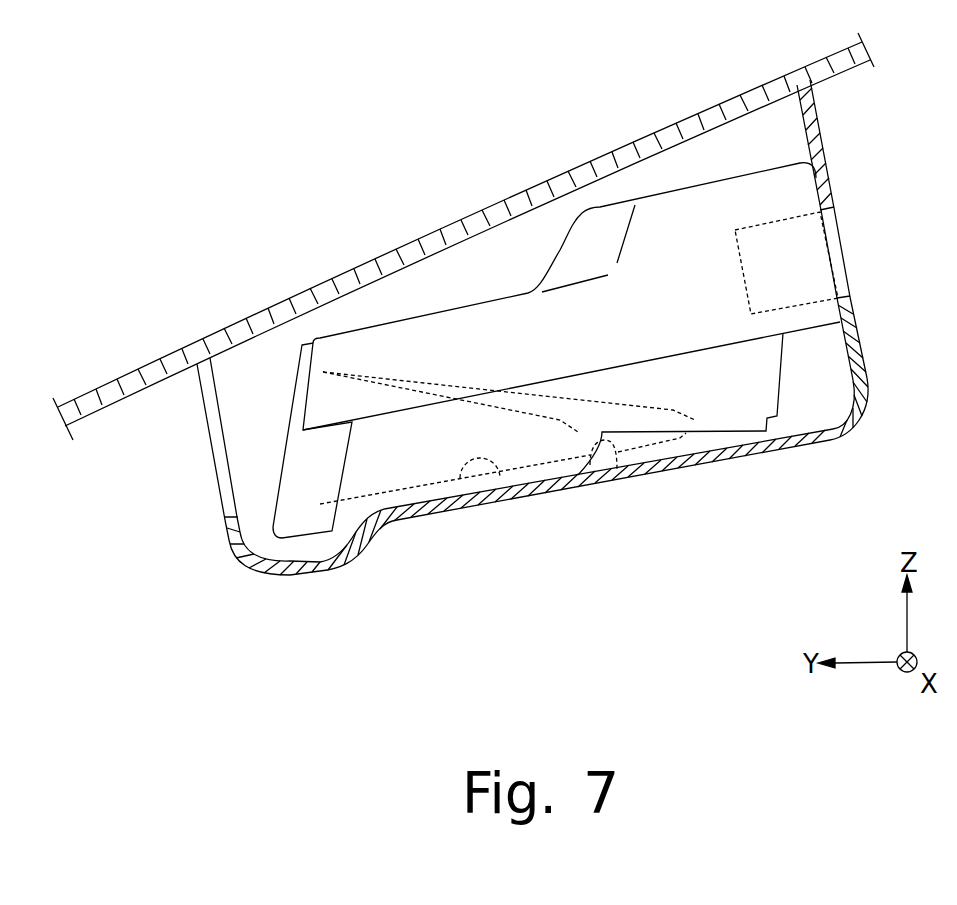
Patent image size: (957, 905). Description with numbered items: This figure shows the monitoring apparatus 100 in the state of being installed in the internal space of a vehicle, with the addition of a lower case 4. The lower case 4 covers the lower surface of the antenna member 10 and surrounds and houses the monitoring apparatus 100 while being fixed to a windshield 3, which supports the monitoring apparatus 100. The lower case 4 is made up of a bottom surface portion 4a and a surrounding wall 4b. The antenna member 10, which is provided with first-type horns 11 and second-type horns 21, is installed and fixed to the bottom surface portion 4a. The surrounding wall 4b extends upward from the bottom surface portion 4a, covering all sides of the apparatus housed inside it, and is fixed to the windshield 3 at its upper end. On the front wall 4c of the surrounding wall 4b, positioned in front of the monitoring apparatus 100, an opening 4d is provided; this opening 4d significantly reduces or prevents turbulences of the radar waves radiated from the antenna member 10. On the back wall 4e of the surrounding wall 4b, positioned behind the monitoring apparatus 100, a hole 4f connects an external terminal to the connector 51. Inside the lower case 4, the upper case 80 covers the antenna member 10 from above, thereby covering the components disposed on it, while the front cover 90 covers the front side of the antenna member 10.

The windshield 3 is at (545, 192).
The lower case 4 is at (538, 327).
The bottom surface portion 4a is at (707, 462).
The surrounding wall 4b is at (828, 171).
The front wall 4c is at (213, 453).
The opening 4d is at (228, 519).
The back wall 4e is at (858, 330).
The hole 4f is at (849, 286).
The antenna member 10 is at (760, 394).
The first-type horns 11 is at (490, 503).
The second-type horns 21 is at (617, 470).
The connector 51 is at (762, 222).
The upper case 80 is at (673, 191).
The front cover 90 is at (313, 535).
The monitoring apparatus 100 is at (841, 147).